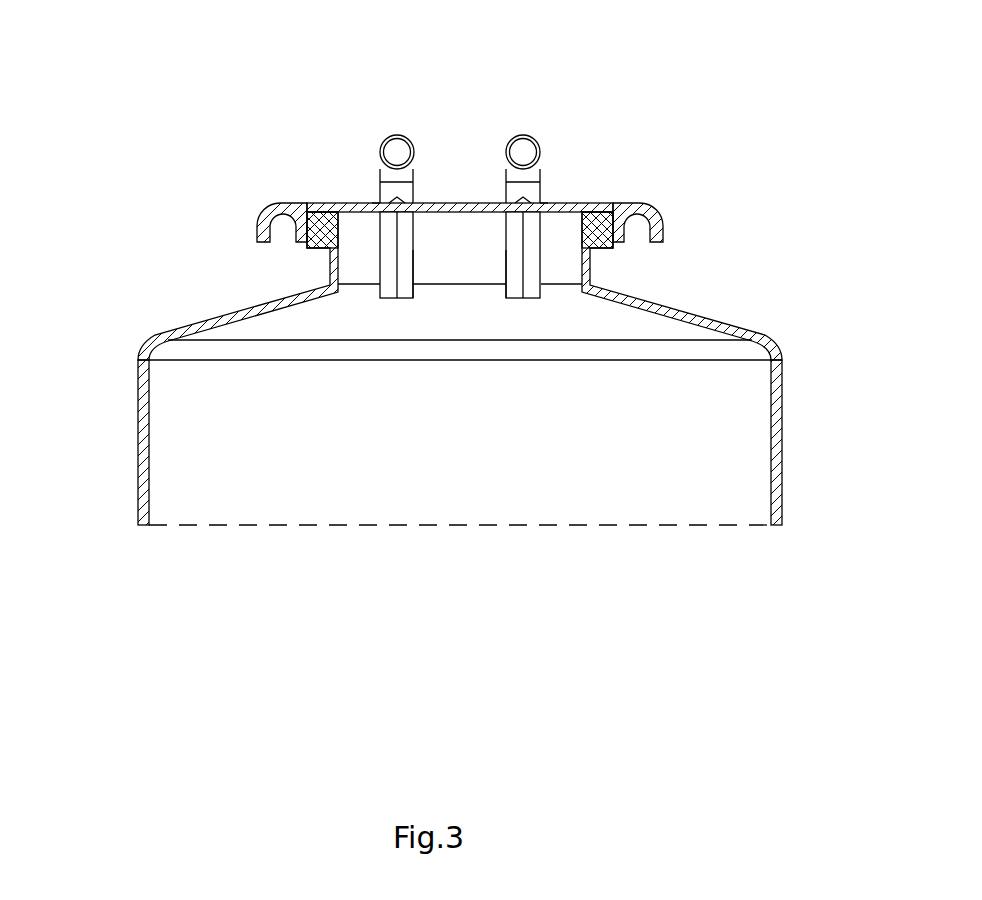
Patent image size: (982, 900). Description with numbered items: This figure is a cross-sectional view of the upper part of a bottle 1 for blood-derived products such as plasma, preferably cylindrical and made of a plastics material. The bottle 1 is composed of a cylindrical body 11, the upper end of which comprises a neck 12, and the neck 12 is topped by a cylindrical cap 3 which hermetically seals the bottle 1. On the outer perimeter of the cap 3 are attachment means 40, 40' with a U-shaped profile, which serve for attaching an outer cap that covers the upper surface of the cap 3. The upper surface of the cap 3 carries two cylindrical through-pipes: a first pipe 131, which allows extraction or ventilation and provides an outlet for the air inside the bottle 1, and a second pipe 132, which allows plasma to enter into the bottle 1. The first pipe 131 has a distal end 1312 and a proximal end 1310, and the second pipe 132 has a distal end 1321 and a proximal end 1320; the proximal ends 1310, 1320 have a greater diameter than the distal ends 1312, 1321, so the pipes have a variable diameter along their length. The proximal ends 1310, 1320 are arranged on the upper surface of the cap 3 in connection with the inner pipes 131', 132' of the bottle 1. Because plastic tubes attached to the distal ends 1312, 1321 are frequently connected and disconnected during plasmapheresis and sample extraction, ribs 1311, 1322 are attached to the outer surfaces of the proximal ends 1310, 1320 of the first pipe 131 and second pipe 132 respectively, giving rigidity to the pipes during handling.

The bottle 1 is at (247, 100).
The cylindrical body 11 is at (138, 447).
The neck 12 is at (330, 265).
The cylindrical cap 3 is at (597, 203).
The attachment means 40 is at (249, 202).
The attachment means 40' is at (672, 202).
The first pipe 131 is at (389, 274).
The proximal end 1310 is at (372, 203).
The rib 1311 is at (397, 298).
The distal end 1312 is at (397, 152).
The inner pipe 131' is at (426, 369).
The second pipe 132 is at (529, 274).
The proximal end 1320 is at (548, 203).
The distal end 1321 is at (523, 152).
The rib 1322 is at (523, 298).
The inner pipe 132' is at (487, 369).